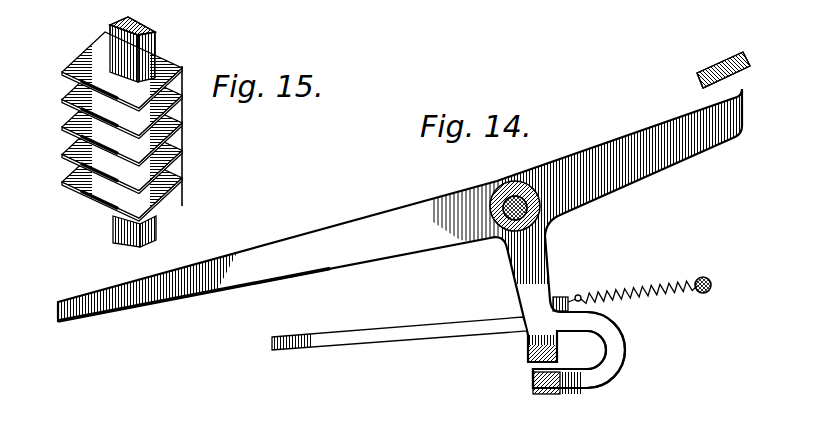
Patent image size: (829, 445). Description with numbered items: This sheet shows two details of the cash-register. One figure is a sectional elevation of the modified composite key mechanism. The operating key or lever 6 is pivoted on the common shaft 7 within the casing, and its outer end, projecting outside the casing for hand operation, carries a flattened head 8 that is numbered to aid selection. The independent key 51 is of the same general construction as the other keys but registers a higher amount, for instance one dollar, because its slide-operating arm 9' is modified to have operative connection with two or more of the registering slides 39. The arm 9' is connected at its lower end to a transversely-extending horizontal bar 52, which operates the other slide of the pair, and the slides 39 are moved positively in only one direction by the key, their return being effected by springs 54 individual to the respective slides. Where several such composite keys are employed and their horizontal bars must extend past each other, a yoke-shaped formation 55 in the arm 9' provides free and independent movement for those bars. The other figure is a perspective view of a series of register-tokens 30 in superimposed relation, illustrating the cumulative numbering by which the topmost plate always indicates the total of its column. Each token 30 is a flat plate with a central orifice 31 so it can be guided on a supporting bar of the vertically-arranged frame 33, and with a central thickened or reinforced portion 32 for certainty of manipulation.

In FIG. 14, the operating key or lever 6 is at (400, 238).
In FIG. 14, the common shaft 7 is at (512, 185).
In FIG. 14, the flattened head 8 is at (724, 64).
In FIG. 14, the slide-operating arm 9' is at (520, 311).
In FIG. 14, the slide 39 is at (400, 335).
In FIG. 14, the independent key 51 is at (622, 182).
In FIG. 14, the transversely-extending horizontal bar 52 is at (540, 394).
In FIG. 14, the spring 54 is at (641, 288).
In FIG. 14, the yoke-shaped formation 55 is at (623, 349).
In FIG. 15, the register-token 30 is at (109, 121).
In FIG. 15, the central orifice 31 is at (176, 82).
In FIG. 15, the central thickened or reinforced portion 32 is at (85, 106).
In FIG. 15, the vertically-arranged frame 33 is at (140, 32).